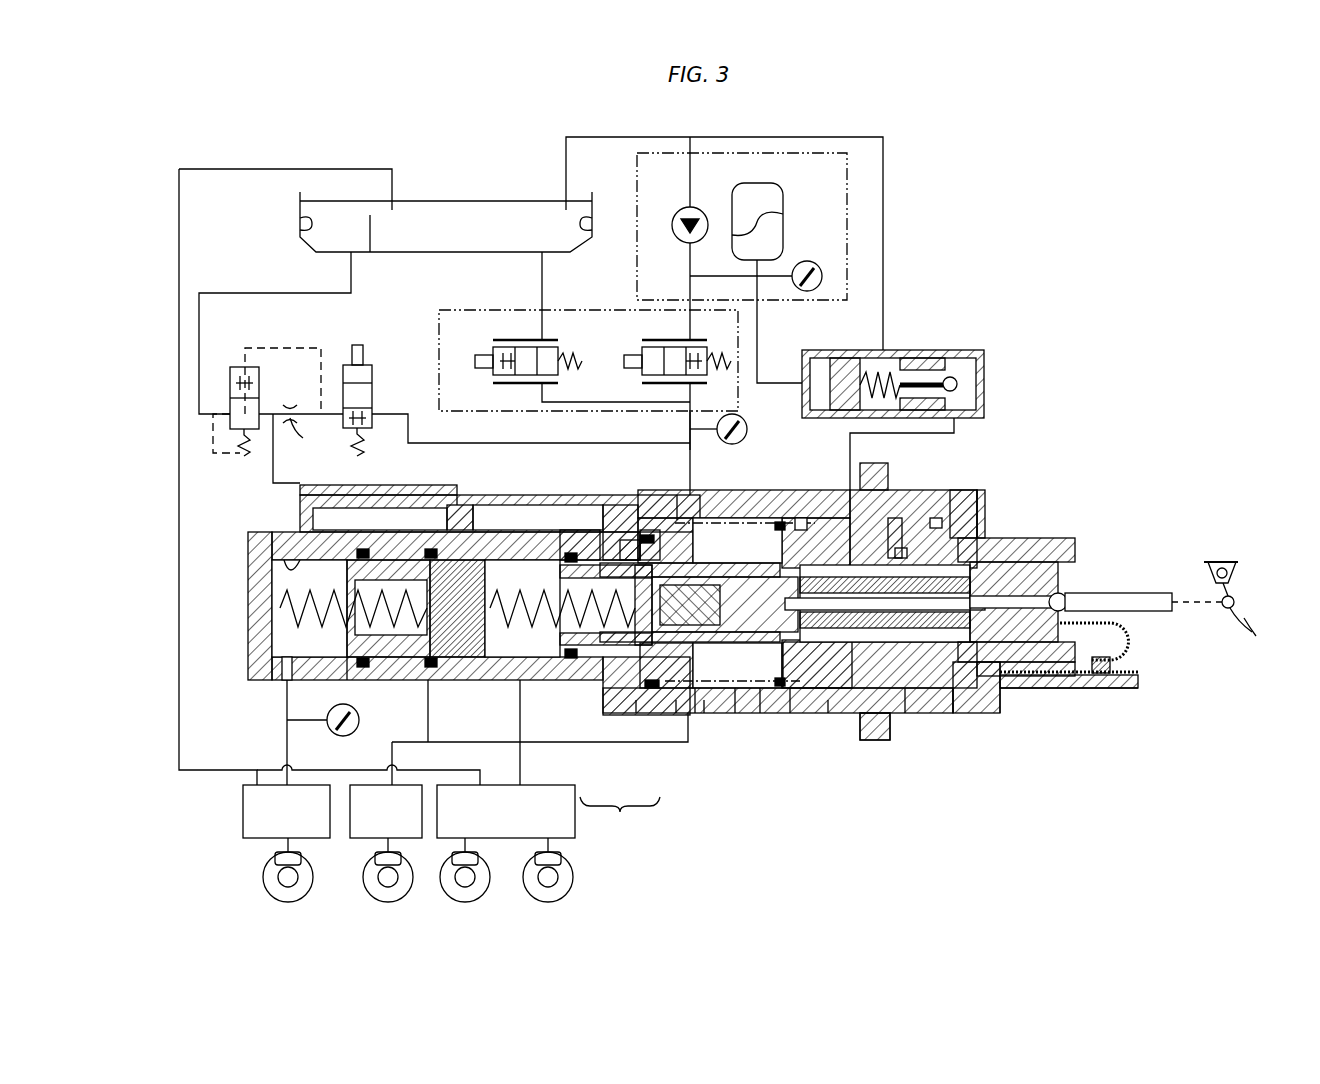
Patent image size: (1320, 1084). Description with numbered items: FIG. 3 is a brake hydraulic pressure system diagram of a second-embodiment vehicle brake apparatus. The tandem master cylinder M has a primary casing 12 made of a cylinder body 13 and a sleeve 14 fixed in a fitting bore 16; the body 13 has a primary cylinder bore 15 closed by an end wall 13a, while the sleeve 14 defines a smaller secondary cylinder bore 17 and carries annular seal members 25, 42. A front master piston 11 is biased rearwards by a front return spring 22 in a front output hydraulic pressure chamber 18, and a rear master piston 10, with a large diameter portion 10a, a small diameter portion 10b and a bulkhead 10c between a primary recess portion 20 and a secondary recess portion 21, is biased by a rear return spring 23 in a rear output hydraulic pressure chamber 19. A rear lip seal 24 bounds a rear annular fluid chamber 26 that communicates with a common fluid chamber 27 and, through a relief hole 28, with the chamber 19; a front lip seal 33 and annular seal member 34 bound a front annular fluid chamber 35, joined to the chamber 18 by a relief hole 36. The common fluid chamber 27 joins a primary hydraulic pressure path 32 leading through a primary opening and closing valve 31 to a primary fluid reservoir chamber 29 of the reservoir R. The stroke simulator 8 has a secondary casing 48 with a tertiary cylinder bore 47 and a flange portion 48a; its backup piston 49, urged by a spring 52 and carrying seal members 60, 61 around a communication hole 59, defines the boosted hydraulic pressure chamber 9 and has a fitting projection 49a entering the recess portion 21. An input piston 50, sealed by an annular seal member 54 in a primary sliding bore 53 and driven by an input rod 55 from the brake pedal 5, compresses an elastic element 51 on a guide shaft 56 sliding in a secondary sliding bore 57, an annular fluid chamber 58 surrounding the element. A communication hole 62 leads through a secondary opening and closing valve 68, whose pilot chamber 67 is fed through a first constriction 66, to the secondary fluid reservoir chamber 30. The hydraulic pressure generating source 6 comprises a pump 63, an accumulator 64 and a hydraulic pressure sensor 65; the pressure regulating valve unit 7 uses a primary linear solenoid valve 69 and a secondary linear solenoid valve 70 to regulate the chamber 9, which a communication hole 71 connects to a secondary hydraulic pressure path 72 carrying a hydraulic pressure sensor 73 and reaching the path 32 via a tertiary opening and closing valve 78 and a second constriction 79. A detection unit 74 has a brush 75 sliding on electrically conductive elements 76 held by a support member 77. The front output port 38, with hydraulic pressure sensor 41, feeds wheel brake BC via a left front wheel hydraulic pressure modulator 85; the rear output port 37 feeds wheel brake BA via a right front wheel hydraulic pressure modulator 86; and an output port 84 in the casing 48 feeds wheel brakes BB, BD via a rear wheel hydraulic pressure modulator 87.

The brake pedal 5 is at (1252, 620).
The hydraulic pressure generating source 6 is at (848, 206).
The pressure regulating valve unit 7 is at (560, 310).
The stroke simulator 8 is at (920, 710).
The boosted hydraulic pressure chamber 9 is at (758, 560).
The rear master piston 10 is at (740, 710).
The large diameter portion 10a is at (530, 520).
The small diameter portion 10b is at (720, 563).
The bulkhead 10c is at (725, 604).
The front master piston 11 is at (450, 690).
The primary casing 12 is at (620, 816).
The cylinder body 13 is at (736, 609).
The end wall 13a is at (250, 624).
The sleeve 14 is at (636, 716).
The primary cylinder bore 15 is at (272, 550).
The fitting bore 16 is at (676, 716).
The secondary cylinder bore 17 is at (690, 605).
The front output hydraulic pressure chamber 18 is at (276, 588).
The rear output hydraulic pressure chamber 19 is at (534, 686).
The primary recess portion 20 is at (560, 630).
The secondary recess portion 21 is at (766, 700).
The front return spring 22 is at (272, 640).
The rear return spring 23 is at (540, 594).
The rear lip seal 24 is at (590, 662).
The annular seal member 25 is at (655, 520).
The rear annular fluid chamber 26 is at (632, 520).
The common fluid chamber 27 is at (583, 512).
The relief hole 28 is at (566, 532).
The primary fluid reservoir chamber 29 is at (300, 224).
The secondary fluid reservoir chamber 30 is at (592, 224).
The primary opening and closing valve 31 is at (262, 392).
The primary hydraulic pressure path 32 is at (273, 474).
The front lip seal 33 is at (352, 678).
The annular seal member 34 is at (440, 530).
The front annular fluid chamber 35 is at (372, 628).
The relief hole 36 is at (360, 572).
The rear output port 37 is at (494, 666).
The front output port 38 is at (272, 732).
The hydraulic pressure sensor 41 is at (356, 708).
The annular seal member 42 is at (678, 492).
The tertiary cylinder bore 47 is at (800, 520).
The secondary casing 48 is at (885, 603).
The inwardly extending flange portion 48a is at (975, 540).
The backup piston 49 is at (936, 520).
The fitting projection 49a is at (698, 690).
The input piston 50 is at (1005, 688).
The elastic element 51 is at (990, 540).
The spring 52 is at (790, 700).
The primary sliding bore 53 is at (1015, 560).
The annular seal member 54 is at (1030, 676).
The input rod 55 is at (1130, 594).
The guide shaft 56 is at (905, 713).
The secondary sliding bore 57 is at (1062, 586).
The annular fluid chamber 58 is at (968, 690).
The communication hole 59 is at (896, 520).
The seal member 60 is at (860, 713).
The seal member 61 is at (960, 518).
The communication hole 62 is at (858, 480).
The pump 63 is at (678, 216).
The accumulator 64 is at (783, 204).
The hydraulic pressure sensor 65 is at (812, 260).
The first constriction 66 is at (790, 376).
The pilot chamber 67 is at (880, 342).
The secondary opening and closing valve 68 is at (872, 383).
The primary linear solenoid valve 69 is at (652, 340).
The secondary linear solenoid valve 70 is at (510, 340).
The communication hole 71 is at (692, 490).
The secondary hydraulic pressure path 72 is at (688, 433).
The hydraulic pressure sensor 73 is at (740, 420).
The detection unit 74 is at (1112, 695).
The brush 75 is at (1115, 658).
The electrically conductive elements 76 is at (1112, 670).
The support member 77 is at (1135, 688).
The tertiary opening and closing valve 78 is at (372, 376).
The second constriction 79 is at (301, 431).
The output port 84 is at (704, 720).
The left front wheel hydraulic pressure modulator 85 is at (236, 812).
The right front wheel hydraulic pressure modulator 86 is at (358, 848).
The rear wheel hydraulic pressure modulator 87 is at (586, 828).
The reservoir R is at (436, 262).
The master cylinder M is at (540, 749).
The wheel brake BA is at (400, 882).
The wheel brake BB is at (478, 882).
The wheel brake BC is at (300, 882).
The wheel brake BD is at (562, 882).